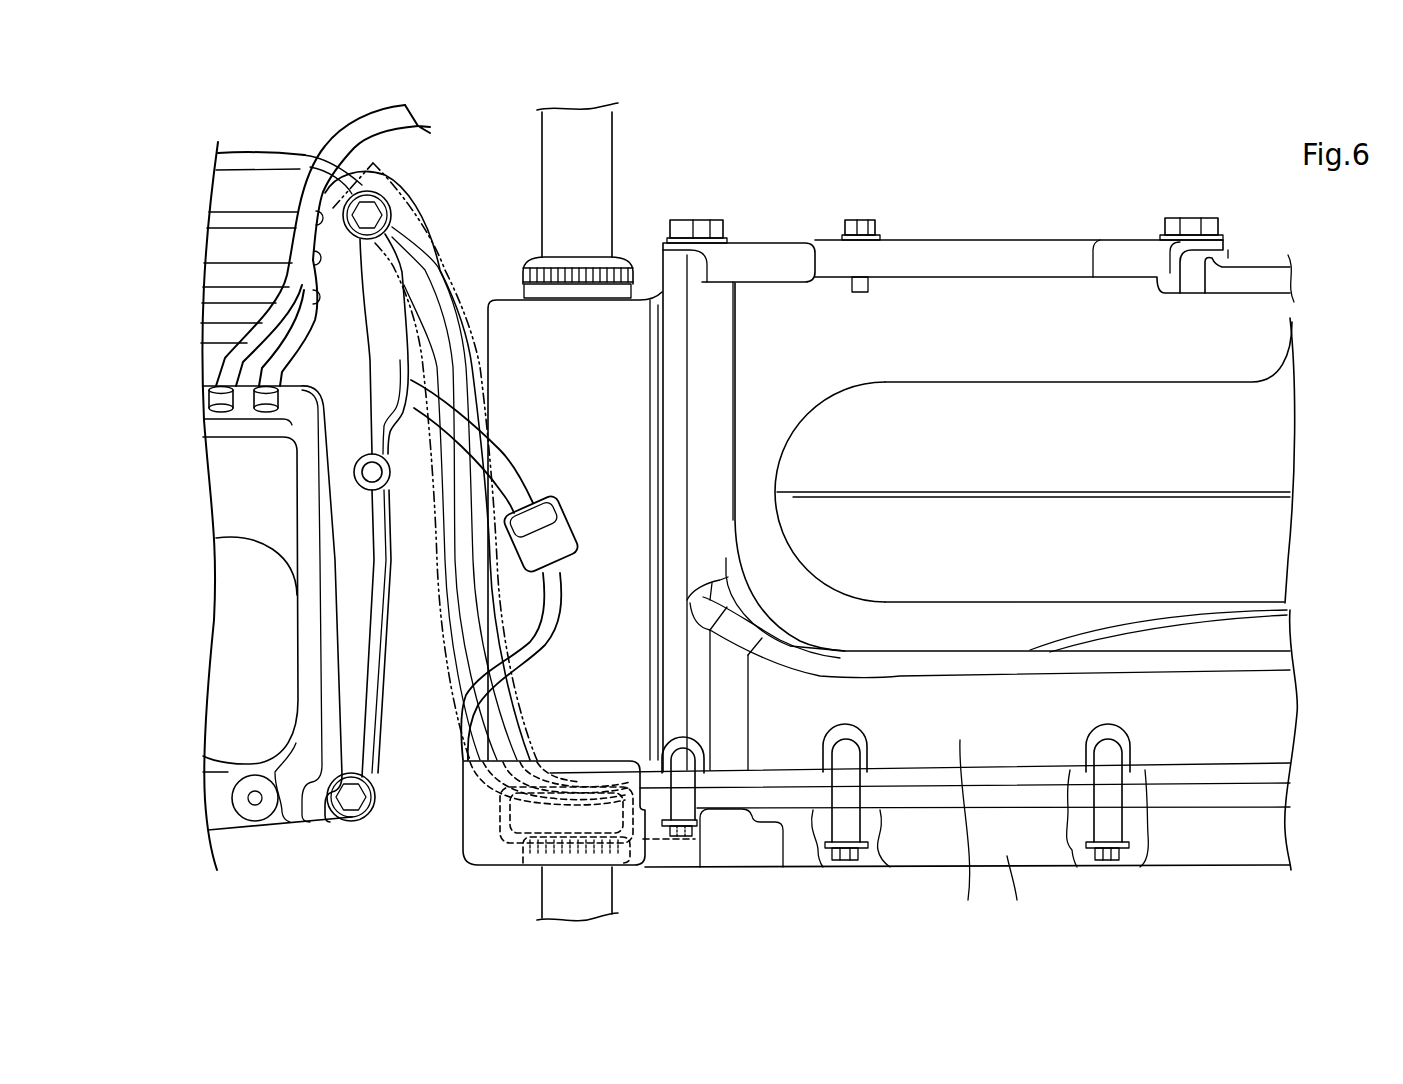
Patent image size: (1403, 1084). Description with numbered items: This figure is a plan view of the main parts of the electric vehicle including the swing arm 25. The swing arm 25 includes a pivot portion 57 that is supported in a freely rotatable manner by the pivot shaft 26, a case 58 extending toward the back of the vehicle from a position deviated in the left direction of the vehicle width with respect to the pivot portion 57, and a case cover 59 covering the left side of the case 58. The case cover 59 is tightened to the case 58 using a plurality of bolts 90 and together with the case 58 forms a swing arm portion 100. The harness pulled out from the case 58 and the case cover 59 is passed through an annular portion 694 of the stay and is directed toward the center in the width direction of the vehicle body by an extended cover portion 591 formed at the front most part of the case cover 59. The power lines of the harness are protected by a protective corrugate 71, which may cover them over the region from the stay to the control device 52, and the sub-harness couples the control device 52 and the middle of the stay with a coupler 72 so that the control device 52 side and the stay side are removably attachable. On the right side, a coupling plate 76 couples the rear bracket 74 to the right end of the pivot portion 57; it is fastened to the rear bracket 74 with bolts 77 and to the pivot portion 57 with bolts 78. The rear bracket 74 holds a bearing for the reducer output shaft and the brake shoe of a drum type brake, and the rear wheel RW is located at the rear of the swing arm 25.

The control device 52 is at (218, 275).
The protective corrugate 71 is at (438, 227).
The coupler 72 is at (557, 530).
The pivot portion 57 is at (590, 384).
The bolt 78 is at (688, 232).
The coupling plate 76 is at (984, 250).
The bolt 77 is at (1196, 222).
The rear bracket 74 is at (1265, 270).
The rear wheel RW is at (1272, 405).
The swing arm portion 100 is at (1037, 714).
The swing arm 25 is at (908, 873).
The bolt 90 is at (845, 862).
The case 58 is at (968, 837).
The case cover 59 is at (1016, 895).
The extended cover portion 591 is at (473, 848).
The annular portion 694 is at (517, 838).
The pivot shaft 26 is at (592, 908).